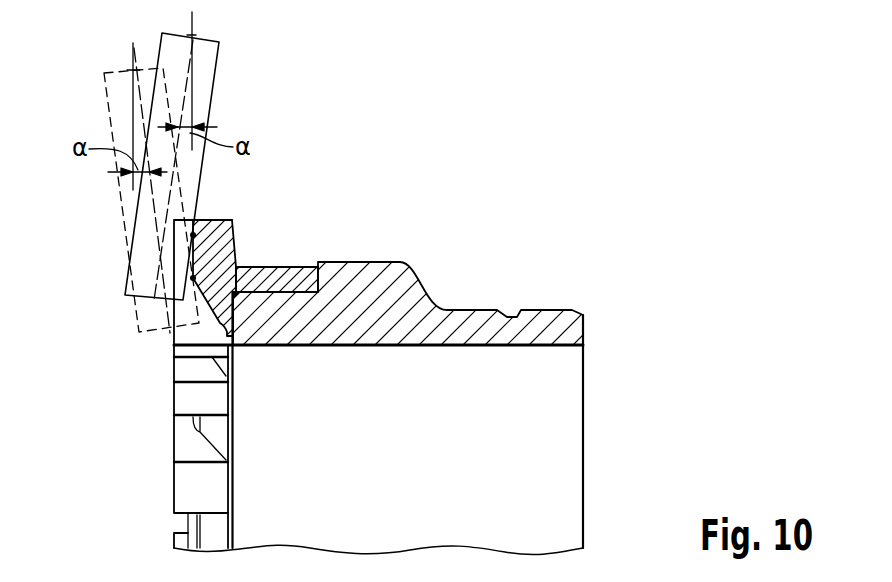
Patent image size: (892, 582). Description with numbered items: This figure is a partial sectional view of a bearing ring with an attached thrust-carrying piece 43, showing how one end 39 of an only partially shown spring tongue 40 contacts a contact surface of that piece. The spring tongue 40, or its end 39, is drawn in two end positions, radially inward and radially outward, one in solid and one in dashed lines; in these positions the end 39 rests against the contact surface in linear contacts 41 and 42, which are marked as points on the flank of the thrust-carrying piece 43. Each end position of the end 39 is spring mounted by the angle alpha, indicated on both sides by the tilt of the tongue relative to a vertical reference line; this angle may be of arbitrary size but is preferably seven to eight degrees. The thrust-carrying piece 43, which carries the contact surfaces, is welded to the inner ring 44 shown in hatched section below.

The end 39 is at (112, 104).
The spring tongue 40 is at (208, 71).
The linear contact 41 is at (192, 279).
The linear contact 42 is at (190, 236).
The thrust-carrying piece 43 is at (282, 283).
The inner ring 44 is at (469, 333).